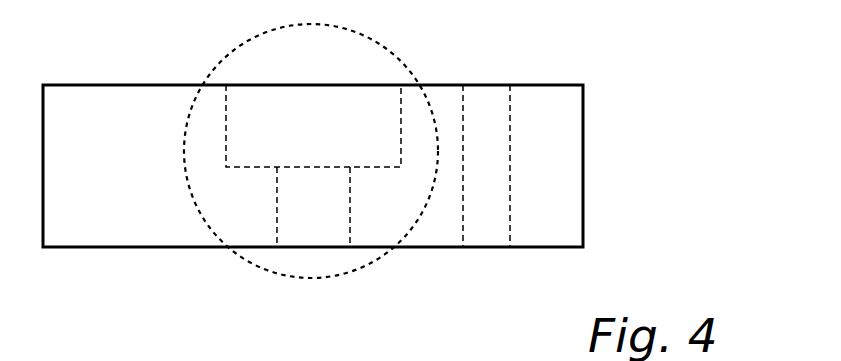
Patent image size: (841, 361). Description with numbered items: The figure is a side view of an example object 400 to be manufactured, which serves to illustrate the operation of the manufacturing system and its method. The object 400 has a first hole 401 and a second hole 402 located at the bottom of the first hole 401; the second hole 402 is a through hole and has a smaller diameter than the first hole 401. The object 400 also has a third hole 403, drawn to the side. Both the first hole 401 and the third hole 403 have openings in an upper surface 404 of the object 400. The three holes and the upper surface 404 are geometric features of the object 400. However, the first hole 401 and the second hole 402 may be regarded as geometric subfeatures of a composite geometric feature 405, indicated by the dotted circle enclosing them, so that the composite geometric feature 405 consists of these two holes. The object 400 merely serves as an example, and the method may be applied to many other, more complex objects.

The object 400 is at (619, 119).
The first hole 401 is at (350, 97).
The second hole 402 is at (325, 228).
The third hole 403 is at (481, 98).
The upper surface 404 is at (93, 353).
The composite geometric feature 405 is at (230, 57).